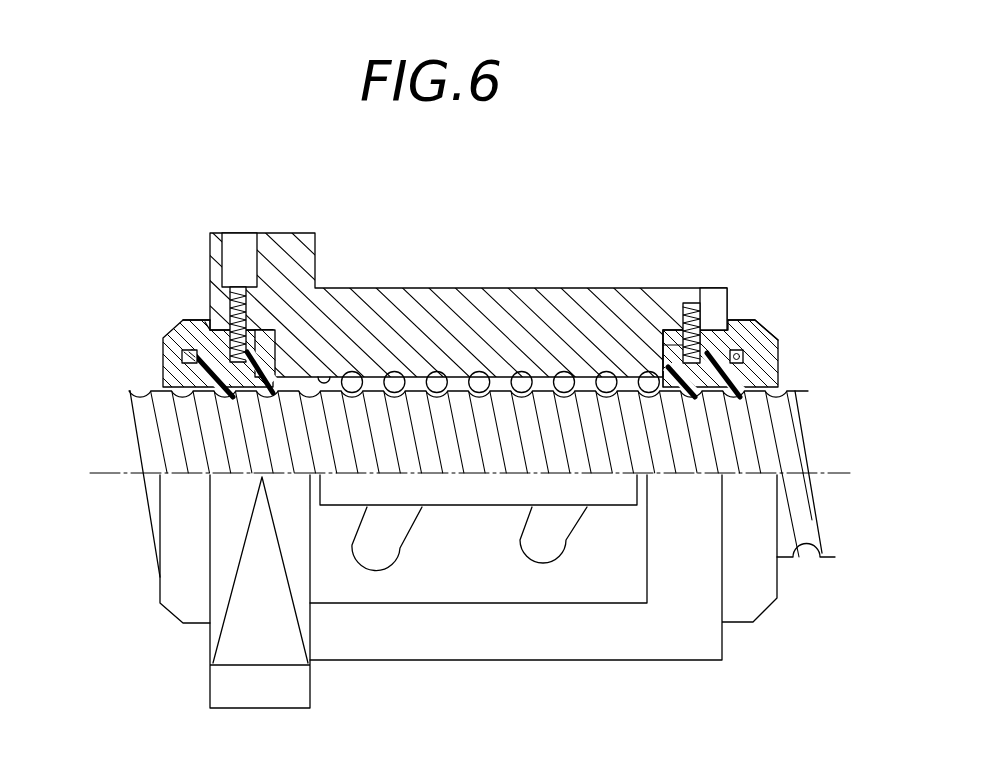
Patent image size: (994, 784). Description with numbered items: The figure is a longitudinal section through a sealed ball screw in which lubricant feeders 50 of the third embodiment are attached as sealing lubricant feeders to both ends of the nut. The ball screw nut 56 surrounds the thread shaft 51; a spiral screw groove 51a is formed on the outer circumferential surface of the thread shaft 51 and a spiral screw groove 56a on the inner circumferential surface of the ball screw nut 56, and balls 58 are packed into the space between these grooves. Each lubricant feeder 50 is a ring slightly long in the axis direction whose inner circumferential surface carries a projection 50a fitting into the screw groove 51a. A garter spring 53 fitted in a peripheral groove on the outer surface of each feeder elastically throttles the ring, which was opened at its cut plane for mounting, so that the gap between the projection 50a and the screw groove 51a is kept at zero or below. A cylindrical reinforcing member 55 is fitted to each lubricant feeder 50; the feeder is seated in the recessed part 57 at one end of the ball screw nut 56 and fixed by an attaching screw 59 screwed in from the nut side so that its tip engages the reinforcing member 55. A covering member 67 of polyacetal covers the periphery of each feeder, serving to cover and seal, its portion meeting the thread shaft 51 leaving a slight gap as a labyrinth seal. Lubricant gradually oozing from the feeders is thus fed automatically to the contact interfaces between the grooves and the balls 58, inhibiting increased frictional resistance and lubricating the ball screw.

The lubricant feeder 50 is at (200, 375).
The projection 50a is at (228, 398).
The thread shaft 51 is at (128, 445).
The screw groove 51a is at (155, 452).
The garter spring 53 is at (190, 348).
The reinforcing member 55 is at (208, 322).
The ball screw nut 56 is at (466, 305).
The screw groove 56a is at (323, 376).
The recessed part 57 is at (263, 328).
The balls 58 is at (522, 383).
The attaching screw 59 is at (237, 300).
The covering member 67 is at (675, 337).